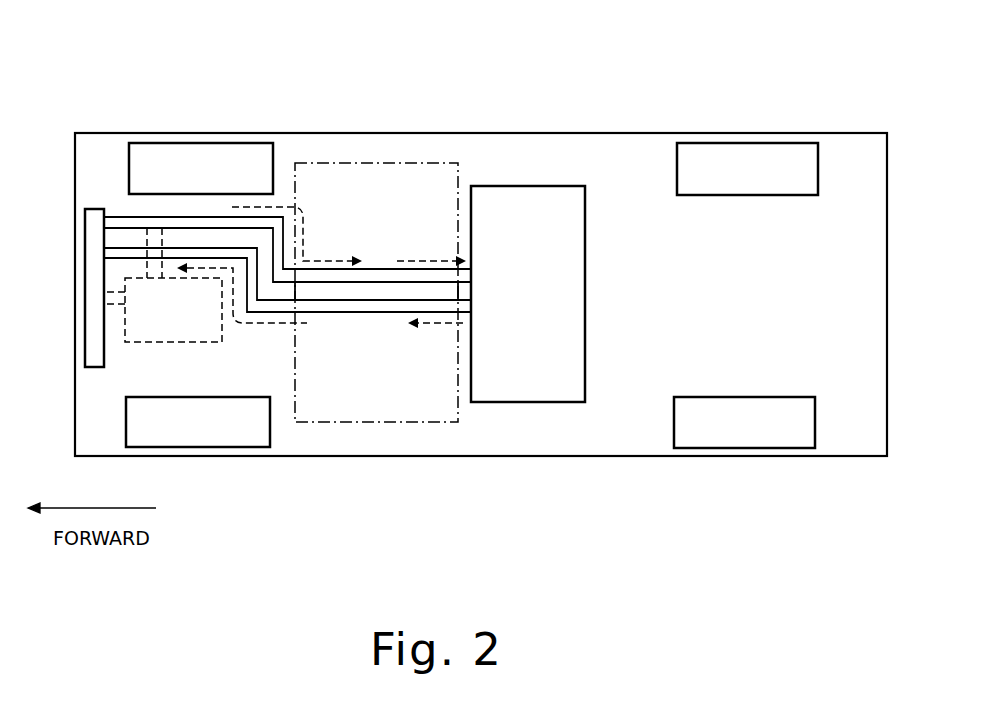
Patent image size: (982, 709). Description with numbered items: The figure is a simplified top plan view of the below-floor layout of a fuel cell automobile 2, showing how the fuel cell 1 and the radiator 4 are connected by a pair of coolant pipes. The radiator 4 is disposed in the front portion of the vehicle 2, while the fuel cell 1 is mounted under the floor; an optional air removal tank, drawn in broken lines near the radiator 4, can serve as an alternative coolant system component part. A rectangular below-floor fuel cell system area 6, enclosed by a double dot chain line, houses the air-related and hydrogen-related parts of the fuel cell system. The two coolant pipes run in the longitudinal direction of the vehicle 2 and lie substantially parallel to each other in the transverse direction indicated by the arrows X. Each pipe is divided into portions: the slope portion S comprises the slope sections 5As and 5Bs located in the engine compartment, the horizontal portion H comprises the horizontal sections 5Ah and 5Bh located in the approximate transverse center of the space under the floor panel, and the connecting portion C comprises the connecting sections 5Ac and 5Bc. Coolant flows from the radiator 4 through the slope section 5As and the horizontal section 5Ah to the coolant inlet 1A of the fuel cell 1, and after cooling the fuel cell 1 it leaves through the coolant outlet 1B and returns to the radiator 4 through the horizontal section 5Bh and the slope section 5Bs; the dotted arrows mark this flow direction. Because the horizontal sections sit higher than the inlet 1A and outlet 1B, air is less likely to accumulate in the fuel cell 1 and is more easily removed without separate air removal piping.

The fuel cell 1 is at (537, 186).
The coolant inlet 1A is at (471, 270).
The coolant outlet 1B is at (471, 302).
The fuel cell automobile 2 is at (632, 133).
The radiator 4 is at (105, 345).
The below-floor fuel cell system area 6 is at (380, 173).
The slope section 5As is at (161, 222).
The horizontal section 5Ah is at (390, 275).
The connecting section 5Ac is at (448, 273).
The slope section 5Bs is at (196, 253).
The horizontal section 5Bh is at (345, 307).
The connecting section 5Bc is at (450, 307).
The slope portion S is at (255, 48).
The connecting portion C is at (538, 33).
The horizontal portion H is at (388, 552).
The transverse direction arrows X is at (44, 224).